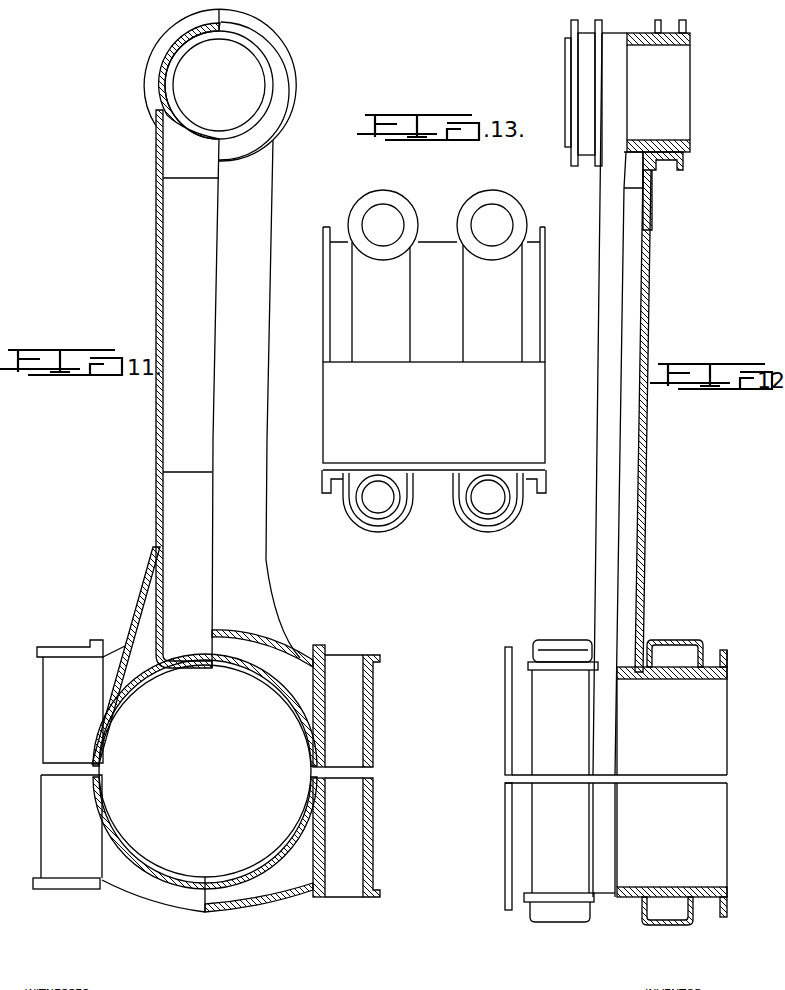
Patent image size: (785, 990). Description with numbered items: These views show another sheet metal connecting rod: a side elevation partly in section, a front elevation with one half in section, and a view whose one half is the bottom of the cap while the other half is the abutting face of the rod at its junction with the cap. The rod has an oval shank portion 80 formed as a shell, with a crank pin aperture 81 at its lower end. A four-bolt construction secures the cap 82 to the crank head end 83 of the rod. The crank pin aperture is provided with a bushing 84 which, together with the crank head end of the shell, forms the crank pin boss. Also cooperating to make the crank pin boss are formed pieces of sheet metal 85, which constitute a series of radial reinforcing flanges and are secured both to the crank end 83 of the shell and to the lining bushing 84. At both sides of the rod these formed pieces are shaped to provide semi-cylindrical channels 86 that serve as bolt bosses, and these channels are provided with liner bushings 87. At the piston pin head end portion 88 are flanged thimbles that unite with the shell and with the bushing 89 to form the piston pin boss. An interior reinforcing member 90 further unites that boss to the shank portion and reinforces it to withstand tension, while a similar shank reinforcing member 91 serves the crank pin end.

In FIG. 11, the oval shank portion 80 is at (228, 389).
In FIG. 11, the crank pin aperture 81 is at (205, 771).
In FIG. 11, the cap 82 is at (207, 890).
In FIG. 13, the cap 82 is at (434, 352).
In FIG. 12, the cap 82 is at (605, 888).
In FIG. 11, the crank head end 83 is at (146, 660).
In FIG. 13, the crank head end 83 is at (435, 471).
In FIG. 12, the crank head end 83 is at (607, 672).
In FIG. 12, the bushing 84 is at (672, 773).
In FIG. 13, the formed pieces of sheet metal 85 is at (547, 520).
In FIG. 12, the formed pieces of sheet metal 85 is at (718, 623).
In FIG. 11, the semi-cylindrical channels 86 is at (68, 764).
In FIG. 13, the semi-cylindrical channels 86 is at (390, 526).
In FIG. 12, the semi-cylindrical channels 86 is at (616, 781).
In FIG. 11, the liner bushings 87 is at (346, 771).
In FIG. 13, the liner bushings 87 is at (388, 518).
In FIG. 11, the flanged thimbles 88 is at (284, 70).
In FIG. 12, the flanged thimbles 88 is at (585, 48).
In FIG. 12, the bushing 89 is at (658, 92).
In FIG. 11, the interior reinforcing member 90 is at (191, 161).
In FIG. 11, the shank reinforcing member 91 is at (187, 497).